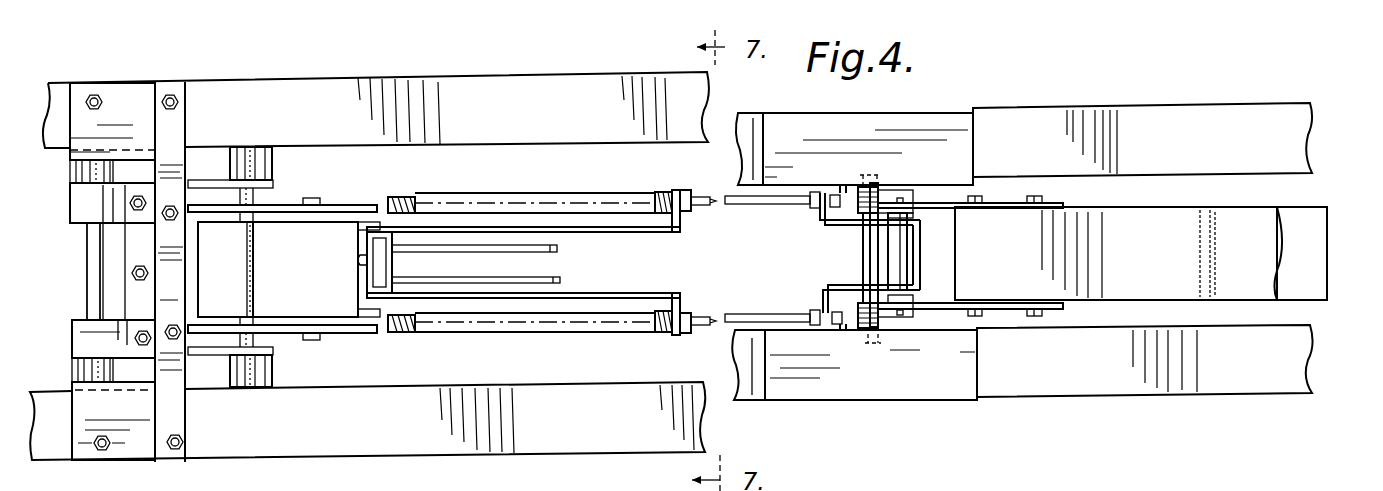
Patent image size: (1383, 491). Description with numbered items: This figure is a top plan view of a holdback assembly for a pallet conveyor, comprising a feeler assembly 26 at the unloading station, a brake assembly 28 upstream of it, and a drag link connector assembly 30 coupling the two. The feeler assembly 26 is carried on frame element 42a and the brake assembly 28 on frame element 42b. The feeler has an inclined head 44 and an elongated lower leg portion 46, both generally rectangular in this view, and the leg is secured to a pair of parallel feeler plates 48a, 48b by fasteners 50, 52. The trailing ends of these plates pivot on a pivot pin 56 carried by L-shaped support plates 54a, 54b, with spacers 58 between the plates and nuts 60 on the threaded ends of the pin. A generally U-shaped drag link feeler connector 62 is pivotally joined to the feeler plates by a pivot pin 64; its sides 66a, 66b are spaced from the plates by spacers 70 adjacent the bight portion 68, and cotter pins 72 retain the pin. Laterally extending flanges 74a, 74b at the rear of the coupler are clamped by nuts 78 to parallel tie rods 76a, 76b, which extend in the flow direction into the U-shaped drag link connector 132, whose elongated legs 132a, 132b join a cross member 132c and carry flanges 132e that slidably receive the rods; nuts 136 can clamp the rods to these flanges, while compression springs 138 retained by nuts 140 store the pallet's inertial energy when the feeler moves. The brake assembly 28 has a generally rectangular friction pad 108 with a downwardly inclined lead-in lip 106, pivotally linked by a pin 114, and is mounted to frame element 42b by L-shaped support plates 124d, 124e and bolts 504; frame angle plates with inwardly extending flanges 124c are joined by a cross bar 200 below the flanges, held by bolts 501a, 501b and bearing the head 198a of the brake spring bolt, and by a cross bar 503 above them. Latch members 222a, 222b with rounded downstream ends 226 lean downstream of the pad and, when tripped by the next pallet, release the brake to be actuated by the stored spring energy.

The feeler assembly 26 is at (1345, 323).
The brake assembly 28 is at (279, 203).
The drag link connector assembly 30 is at (562, 344).
The frame element 42a is at (1190, 115).
The frame element 42b is at (470, 92).
The inclined head 44 is at (1240, 211).
The lower leg portion 46 is at (1130, 215).
The feeler plate 48a is at (1061, 312).
The feeler plate 48b is at (1061, 200).
The fastener 50 is at (1037, 314).
The fastener 52 is at (978, 195).
The support plate 54a is at (856, 403).
The support plate 54b is at (931, 112).
The pivot pin 56 is at (864, 253).
The spacer 58 is at (882, 330).
The nut 60 is at (879, 283).
The drag link feeler connector 62 is at (814, 232).
The pivot pin 64 is at (902, 259).
The side of U-shaped coupler 66a is at (845, 330).
The side of U-shaped coupler 66b is at (848, 168).
The bight portion 68 is at (918, 238).
The spacer 70 is at (884, 212).
The cotter pin 72 is at (897, 313).
The flange 74a is at (822, 299).
The flange 74b is at (820, 214).
The tie rod 76a is at (712, 334).
The tie rod 76b is at (718, 191).
The nut 78 is at (816, 326).
The downwardly inclined lip 106 is at (196, 302).
The friction pad 108 is at (340, 294).
The pin 114 is at (308, 202).
The flange member 124c is at (75, 205).
The L-shaped support plate 124d is at (139, 452).
The L-shaped support plate 124e is at (116, 97).
The drag link connector 132 is at (683, 236).
The elongated leg 132a is at (606, 295).
The elongated leg 132b is at (523, 230).
The cross member 132c is at (368, 256).
The flange 132e is at (686, 232).
The nut 136 is at (684, 300).
The compression spring 138 is at (655, 194).
The nut 140 is at (389, 200).
The bolt head 198a is at (132, 276).
The cross bar 200 is at (128, 255).
The latch member 222a is at (470, 282).
The latch member 222b is at (510, 238).
The downstream end 226 is at (614, 238).
The bolt 501a is at (135, 339).
The bolt 501b is at (132, 204).
The cross bar 503 is at (185, 412).
The bolt 504 is at (183, 442).